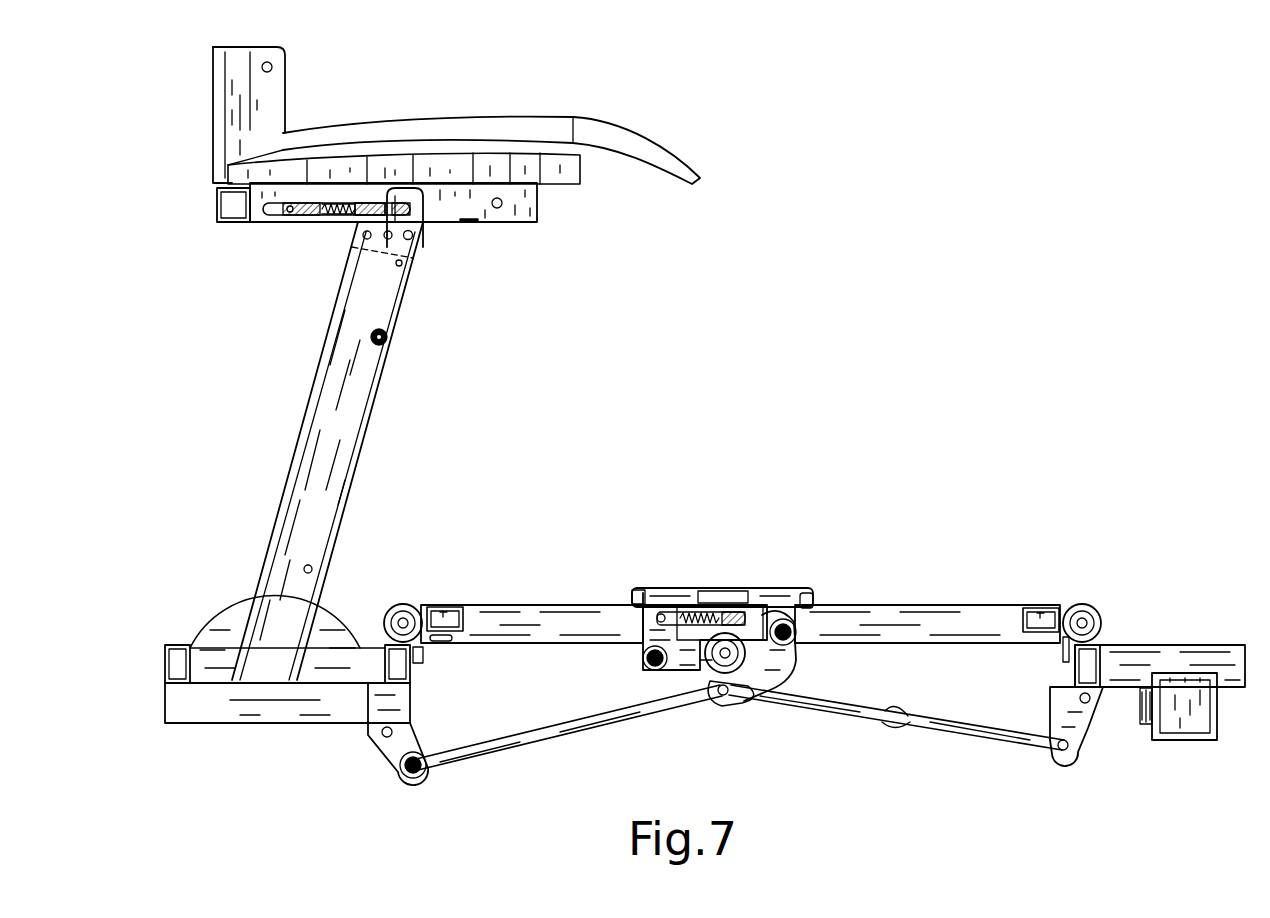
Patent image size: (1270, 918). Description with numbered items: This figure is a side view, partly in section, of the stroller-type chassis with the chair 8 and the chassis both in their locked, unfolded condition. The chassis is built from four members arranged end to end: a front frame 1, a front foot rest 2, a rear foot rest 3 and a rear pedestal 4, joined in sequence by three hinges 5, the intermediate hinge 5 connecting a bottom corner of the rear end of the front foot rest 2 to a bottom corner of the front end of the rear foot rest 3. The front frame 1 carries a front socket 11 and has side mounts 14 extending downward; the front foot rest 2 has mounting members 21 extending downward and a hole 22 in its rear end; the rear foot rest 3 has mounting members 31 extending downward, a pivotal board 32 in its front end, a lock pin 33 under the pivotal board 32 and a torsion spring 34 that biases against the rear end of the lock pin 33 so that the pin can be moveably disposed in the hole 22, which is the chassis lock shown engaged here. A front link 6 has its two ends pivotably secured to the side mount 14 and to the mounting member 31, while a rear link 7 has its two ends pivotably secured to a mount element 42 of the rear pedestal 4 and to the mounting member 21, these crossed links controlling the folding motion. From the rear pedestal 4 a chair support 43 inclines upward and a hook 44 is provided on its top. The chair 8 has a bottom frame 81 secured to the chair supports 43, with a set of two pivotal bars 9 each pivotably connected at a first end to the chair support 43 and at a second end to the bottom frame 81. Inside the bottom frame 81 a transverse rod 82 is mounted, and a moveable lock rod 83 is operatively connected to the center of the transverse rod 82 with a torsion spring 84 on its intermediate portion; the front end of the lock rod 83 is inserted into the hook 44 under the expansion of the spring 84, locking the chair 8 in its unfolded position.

The front frame 1 is at (1130, 650).
The front foot rest 2 is at (948, 625).
The rear foot rest 3 is at (545, 625).
The rear pedestal 4 is at (240, 700).
The hinge 5 is at (400, 612).
The front link 6 is at (912, 715).
The rear link 7 is at (590, 725).
The chair 8 is at (392, 137).
The pivotal bar 9 is at (327, 230).
The front socket 11 is at (1172, 713).
The side mount 14 is at (1082, 718).
The mounting member 21 is at (775, 690).
The hole 22 is at (752, 610).
The mounting member 31 is at (687, 683).
The pivotal board 32 is at (790, 600).
The lock pin 33 is at (730, 612).
The torsion spring 34 is at (697, 612).
The mount element 42 is at (390, 742).
The chair support 43 is at (318, 438).
The hook 44 is at (417, 206).
The bottom frame 81 is at (525, 208).
The transverse rod 82 is at (290, 207).
The lock rod 83 is at (367, 203).
The torsion spring 84 is at (347, 203).